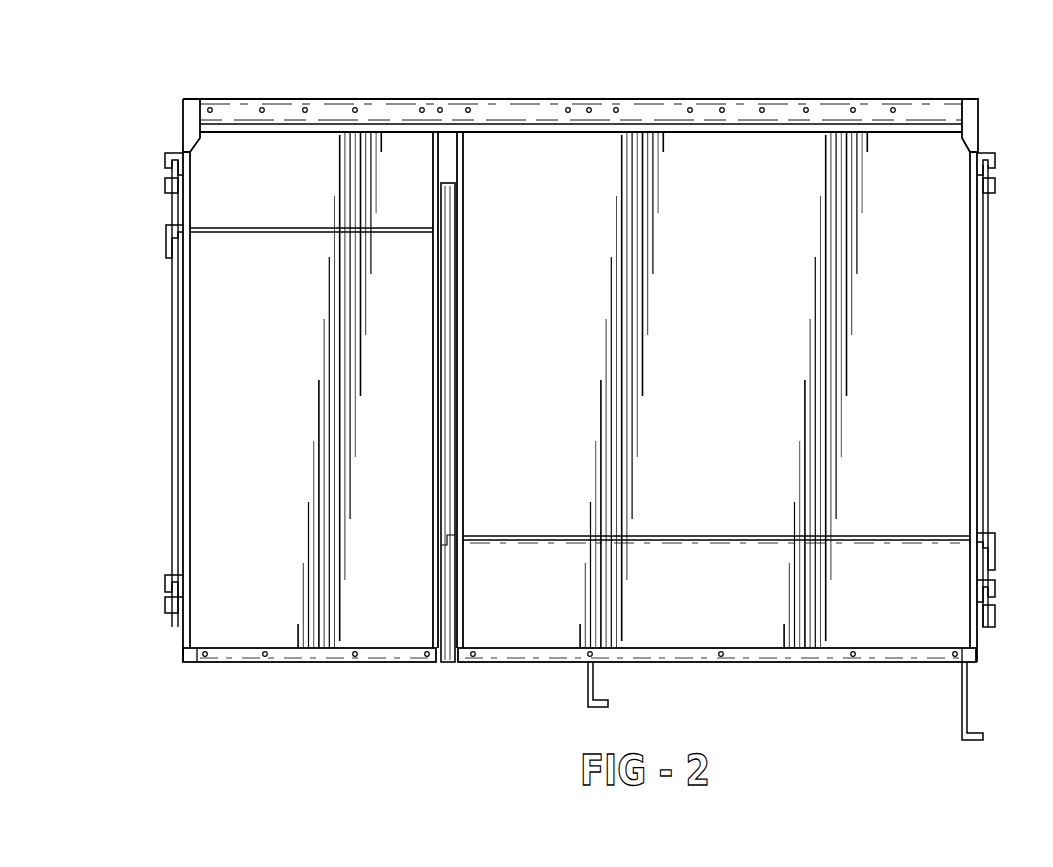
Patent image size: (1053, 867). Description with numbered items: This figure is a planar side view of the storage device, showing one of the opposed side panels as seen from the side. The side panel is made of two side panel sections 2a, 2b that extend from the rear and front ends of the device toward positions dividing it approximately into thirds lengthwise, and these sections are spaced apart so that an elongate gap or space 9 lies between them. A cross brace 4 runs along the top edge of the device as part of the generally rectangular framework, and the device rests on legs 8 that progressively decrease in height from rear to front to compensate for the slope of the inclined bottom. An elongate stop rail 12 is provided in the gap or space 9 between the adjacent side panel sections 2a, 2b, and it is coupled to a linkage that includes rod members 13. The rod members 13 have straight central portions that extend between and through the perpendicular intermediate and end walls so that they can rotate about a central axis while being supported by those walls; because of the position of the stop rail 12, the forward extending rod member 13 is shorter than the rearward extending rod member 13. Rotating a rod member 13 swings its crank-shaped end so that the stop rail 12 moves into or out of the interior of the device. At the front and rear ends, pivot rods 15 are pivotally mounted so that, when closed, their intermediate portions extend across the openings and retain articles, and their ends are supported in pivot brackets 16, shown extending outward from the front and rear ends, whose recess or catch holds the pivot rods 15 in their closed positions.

The side panel section 2a is at (717, 397).
The side panel section 2b is at (310, 397).
The cross brace 4 is at (183, 130).
The leg 8 is at (588, 687).
The gap or space 9 is at (447, 158).
The stop rail 12 is at (450, 300).
The rod member 13 is at (235, 232).
The pivot rod 15 is at (172, 467).
The pivot bracket 16 is at (165, 152).